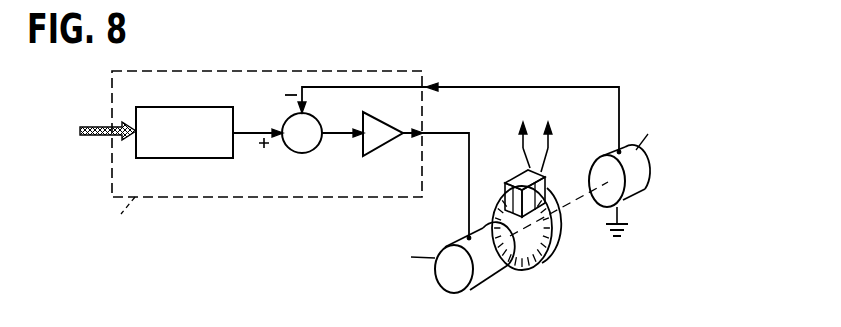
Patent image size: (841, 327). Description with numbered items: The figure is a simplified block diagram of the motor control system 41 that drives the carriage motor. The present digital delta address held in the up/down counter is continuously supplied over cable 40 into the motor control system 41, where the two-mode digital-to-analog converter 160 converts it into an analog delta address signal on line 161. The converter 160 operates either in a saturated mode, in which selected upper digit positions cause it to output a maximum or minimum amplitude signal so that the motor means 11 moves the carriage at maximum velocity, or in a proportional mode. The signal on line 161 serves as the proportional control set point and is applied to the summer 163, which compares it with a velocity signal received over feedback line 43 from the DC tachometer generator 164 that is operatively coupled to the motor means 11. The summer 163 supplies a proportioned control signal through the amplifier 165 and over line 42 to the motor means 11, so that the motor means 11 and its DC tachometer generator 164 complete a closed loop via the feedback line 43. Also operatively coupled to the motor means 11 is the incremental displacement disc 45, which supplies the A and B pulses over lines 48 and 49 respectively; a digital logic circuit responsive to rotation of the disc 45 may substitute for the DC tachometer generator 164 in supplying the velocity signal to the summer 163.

The cable 40 is at (87, 124).
The motor control system 41 is at (109, 177).
The two-mode digital-to-analog converter 160 is at (183, 107).
The line 161 is at (243, 131).
The summer 163 is at (297, 153).
The amplifier 165 is at (374, 157).
The line 42 is at (440, 133).
The feedback line 43 is at (460, 86).
The line 48 is at (520, 140).
The line 49 is at (554, 140).
The motor means 11 is at (442, 280).
The incremental displacement disc 45 is at (530, 270).
The DC tachometer generator 164 is at (646, 179).